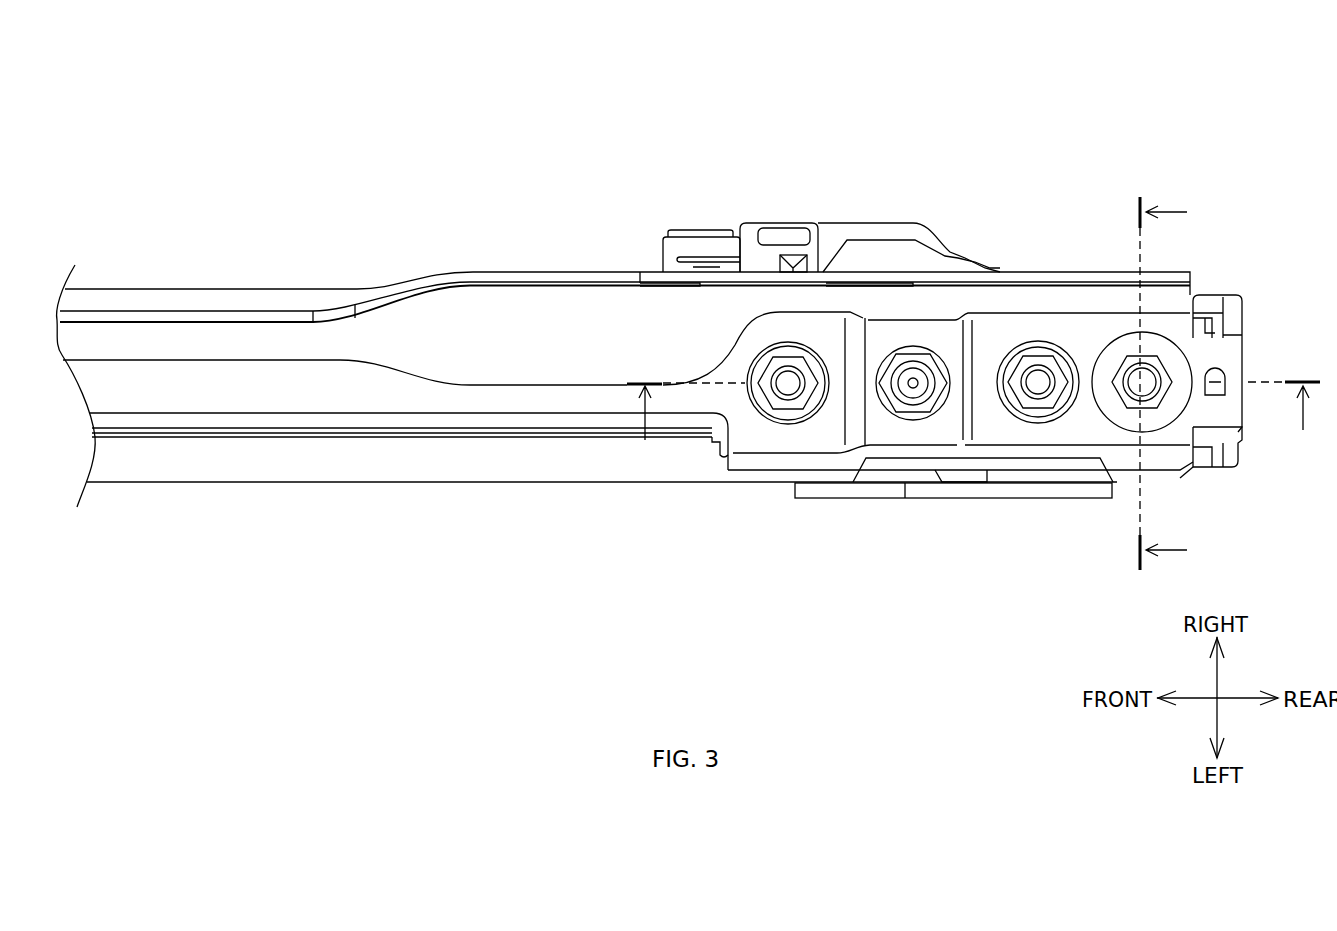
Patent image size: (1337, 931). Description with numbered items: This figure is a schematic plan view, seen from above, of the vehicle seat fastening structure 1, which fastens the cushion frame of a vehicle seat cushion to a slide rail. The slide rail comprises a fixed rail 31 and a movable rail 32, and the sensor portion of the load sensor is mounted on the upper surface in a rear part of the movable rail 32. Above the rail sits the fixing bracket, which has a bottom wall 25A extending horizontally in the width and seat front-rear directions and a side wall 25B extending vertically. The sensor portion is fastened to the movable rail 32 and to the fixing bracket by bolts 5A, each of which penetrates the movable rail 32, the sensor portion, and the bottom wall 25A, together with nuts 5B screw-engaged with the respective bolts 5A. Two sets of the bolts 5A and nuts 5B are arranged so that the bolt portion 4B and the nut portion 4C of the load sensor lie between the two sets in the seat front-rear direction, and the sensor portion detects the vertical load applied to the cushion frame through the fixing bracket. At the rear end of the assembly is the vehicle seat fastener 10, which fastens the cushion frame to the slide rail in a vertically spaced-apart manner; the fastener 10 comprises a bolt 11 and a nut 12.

The vehicle seat fastening structure 1 is at (690, 338).
The vehicle seat fastener 10 is at (1189, 418).
The bolt 11 is at (1142, 380).
The nut 12 is at (1180, 373).
The bottom wall 25A is at (1073, 333).
The side wall 25B is at (975, 305).
The fixed rail 31 is at (598, 460).
The movable rail 32 is at (518, 420).
The bolt portion 4B is at (914, 395).
The nut portion 4C is at (905, 400).
The bolt 5A is at (787, 387).
The nut 5B is at (792, 412).